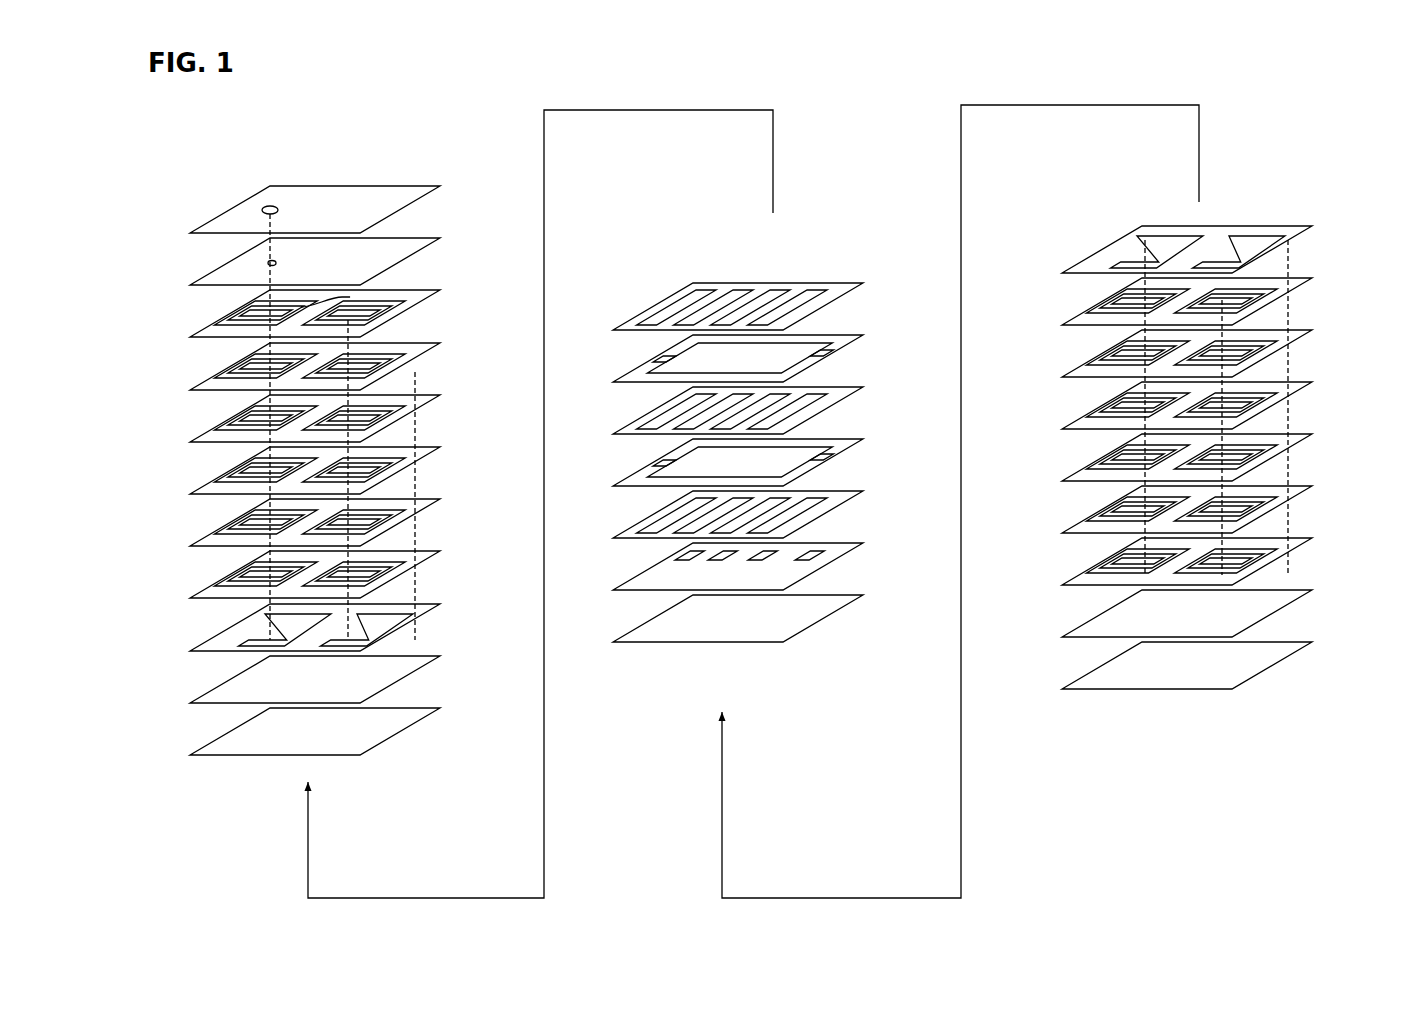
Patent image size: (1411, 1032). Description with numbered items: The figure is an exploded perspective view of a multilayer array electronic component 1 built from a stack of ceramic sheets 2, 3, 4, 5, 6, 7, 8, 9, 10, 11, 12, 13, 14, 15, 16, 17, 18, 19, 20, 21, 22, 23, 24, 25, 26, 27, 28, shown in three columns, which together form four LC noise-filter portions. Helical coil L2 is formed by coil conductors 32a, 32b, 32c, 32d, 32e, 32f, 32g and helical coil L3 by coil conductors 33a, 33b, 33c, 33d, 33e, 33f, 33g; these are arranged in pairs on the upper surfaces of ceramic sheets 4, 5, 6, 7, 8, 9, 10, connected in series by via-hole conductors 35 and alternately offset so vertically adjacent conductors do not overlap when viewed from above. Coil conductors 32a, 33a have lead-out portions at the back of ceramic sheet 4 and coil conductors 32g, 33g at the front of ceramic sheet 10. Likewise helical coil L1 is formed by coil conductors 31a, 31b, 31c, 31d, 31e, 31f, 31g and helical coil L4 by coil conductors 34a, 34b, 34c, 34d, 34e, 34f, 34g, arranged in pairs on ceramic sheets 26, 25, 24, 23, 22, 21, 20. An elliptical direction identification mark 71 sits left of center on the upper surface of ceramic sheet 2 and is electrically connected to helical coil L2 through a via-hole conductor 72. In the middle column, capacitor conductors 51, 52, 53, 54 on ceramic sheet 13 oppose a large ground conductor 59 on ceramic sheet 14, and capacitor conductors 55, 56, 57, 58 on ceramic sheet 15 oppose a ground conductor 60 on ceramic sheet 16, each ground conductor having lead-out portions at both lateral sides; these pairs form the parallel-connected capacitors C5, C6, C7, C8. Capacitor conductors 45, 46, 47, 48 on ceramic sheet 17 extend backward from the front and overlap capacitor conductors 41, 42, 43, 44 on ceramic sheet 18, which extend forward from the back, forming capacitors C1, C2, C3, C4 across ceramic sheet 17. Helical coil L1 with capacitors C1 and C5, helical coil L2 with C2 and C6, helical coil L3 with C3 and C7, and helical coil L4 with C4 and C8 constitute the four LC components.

The multilayer array electronic component 1 is at (212, 133).
The ceramic sheet 2 is at (440, 186).
The ceramic sheet 3 is at (440, 238).
The ceramic sheet 4 is at (440, 290).
The ceramic sheet 5 is at (440, 343).
The ceramic sheet 6 is at (440, 395).
The ceramic sheet 7 is at (440, 447).
The ceramic sheet 8 is at (440, 499).
The ceramic sheet 9 is at (440, 551).
The ceramic sheet 10 is at (440, 604).
The ceramic sheet 11 is at (440, 656).
The ceramic sheet 12 is at (440, 708).
The ceramic sheet 13 is at (869, 283).
The ceramic sheet 14 is at (869, 335).
The ceramic sheet 15 is at (869, 387).
The ceramic sheet 16 is at (869, 439).
The ceramic sheet 17 is at (869, 491).
The ceramic sheet 18 is at (869, 543).
The ceramic sheet 19 is at (869, 595).
The ceramic sheet 20 is at (1312, 226).
The ceramic sheet 21 is at (1312, 278).
The ceramic sheet 22 is at (1312, 330).
The ceramic sheet 23 is at (1312, 382).
The ceramic sheet 24 is at (1312, 434).
The ceramic sheet 25 is at (1312, 486).
The ceramic sheet 26 is at (1312, 538).
The ceramic sheet 27 is at (1312, 590).
The ceramic sheet 28 is at (1312, 642).
The coil conductor 31a is at (1086, 572).
The coil conductor 31b is at (1086, 520).
The coil conductor 31c is at (1086, 468).
The coil conductor 31d is at (1086, 416).
The coil conductor 31e is at (1086, 364).
The coil conductor 31f is at (1086, 312).
The coil conductor 31g is at (1108, 264).
The coil conductor 32a is at (216, 325).
The coil conductor 32b is at (216, 378).
The coil conductor 32c is at (216, 430).
The coil conductor 32d is at (216, 482).
The coil conductor 32e is at (216, 534).
The coil conductor 32f is at (216, 586).
The coil conductor 32g is at (240, 644).
The coil conductor 33a is at (392, 313).
The coil conductor 33b is at (388, 364).
The coil conductor 33c is at (388, 419).
The coil conductor 33d is at (388, 469).
The coil conductor 33e is at (388, 522).
The coil conductor 33f is at (388, 574).
The coil conductor 33g is at (392, 620).
The coil conductor 34a is at (1254, 565).
The coil conductor 34b is at (1254, 513).
The coil conductor 34c is at (1254, 461).
The coil conductor 34d is at (1254, 410).
The coil conductor 34e is at (1254, 358).
The coil conductor 34f is at (1254, 306).
The coil conductor 34g is at (1272, 240).
The via-hole conductor 35 is at (268, 320).
The capacitor conductor 41 is at (675, 564).
The capacitor conductor 42 is at (720, 572).
The capacitor conductor 43 is at (803, 548).
The capacitor conductor 44 is at (847, 552).
The capacitor conductor 45 is at (680, 512).
The capacitor conductor 46 is at (700, 522).
The capacitor conductor 47 is at (783, 508).
The capacitor conductor 48 is at (813, 510).
The capacitor conductor 51 is at (675, 300).
The capacitor conductor 52 is at (730, 296).
The capacitor conductor 53 is at (770, 295).
The capacitor conductor 54 is at (812, 300).
The capacitor conductor 55 is at (678, 410).
The capacitor conductor 56 is at (700, 420).
The capacitor conductor 57 is at (785, 405).
The capacitor conductor 58 is at (812, 408).
The ground conductor 59 is at (658, 360).
The ground conductor 60 is at (658, 462).
The direction identification mark 71 is at (276, 208).
The via-hole conductor 72 is at (276, 261).
The helical coil L1 is at (1114, 580).
The helical coil L2 is at (236, 322).
The helical coil L3 is at (412, 281).
The helical coil L4 is at (1250, 576).
The capacitor C1 is at (640, 583).
The capacitor C2 is at (684, 617).
The capacitor C3 is at (799, 598).
The capacitor C4 is at (851, 565).
The capacitor C5 is at (670, 276).
The capacitor C6 is at (714, 270).
The capacitor C7 is at (765, 276).
The capacitor C8 is at (814, 276).